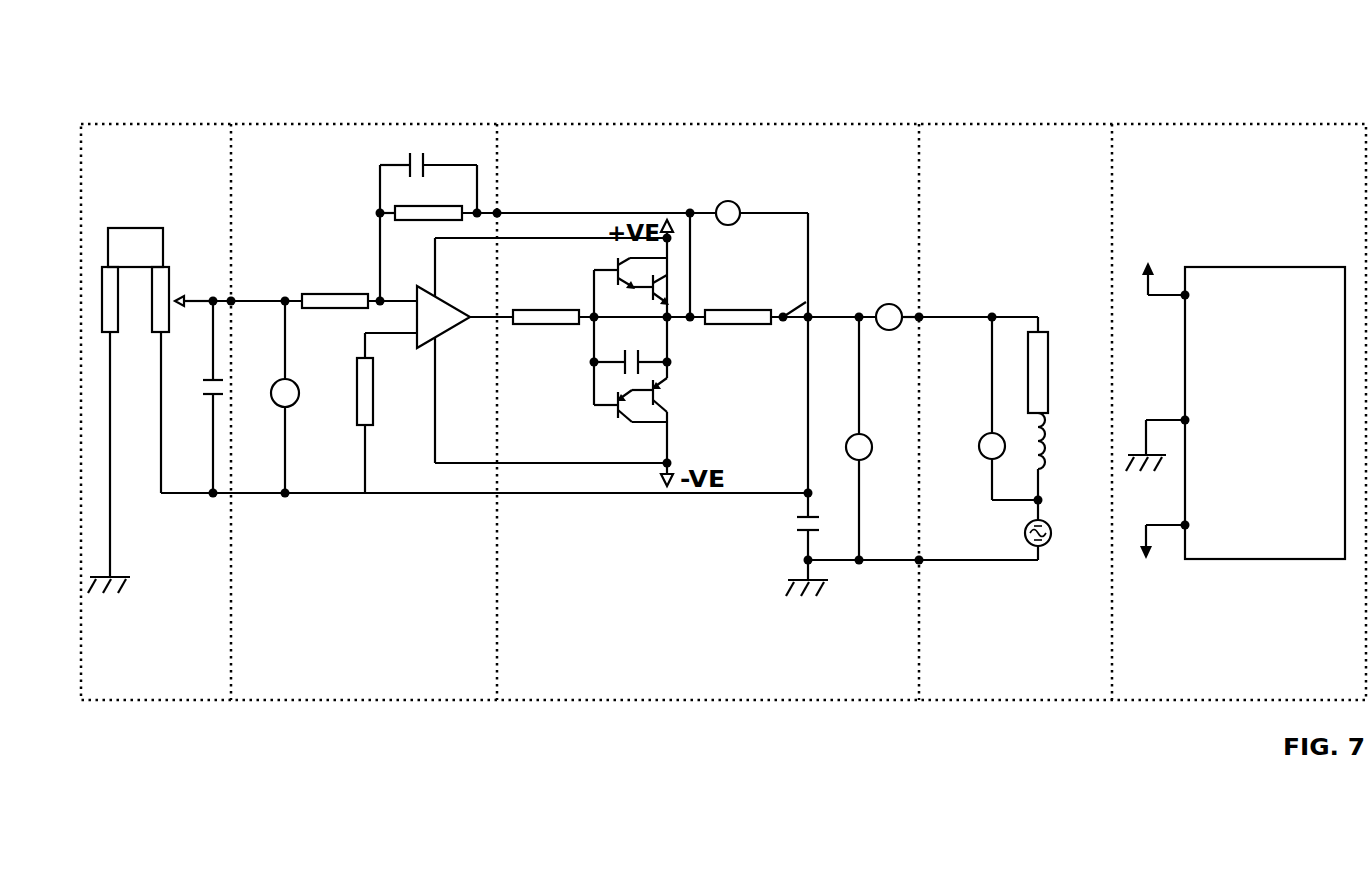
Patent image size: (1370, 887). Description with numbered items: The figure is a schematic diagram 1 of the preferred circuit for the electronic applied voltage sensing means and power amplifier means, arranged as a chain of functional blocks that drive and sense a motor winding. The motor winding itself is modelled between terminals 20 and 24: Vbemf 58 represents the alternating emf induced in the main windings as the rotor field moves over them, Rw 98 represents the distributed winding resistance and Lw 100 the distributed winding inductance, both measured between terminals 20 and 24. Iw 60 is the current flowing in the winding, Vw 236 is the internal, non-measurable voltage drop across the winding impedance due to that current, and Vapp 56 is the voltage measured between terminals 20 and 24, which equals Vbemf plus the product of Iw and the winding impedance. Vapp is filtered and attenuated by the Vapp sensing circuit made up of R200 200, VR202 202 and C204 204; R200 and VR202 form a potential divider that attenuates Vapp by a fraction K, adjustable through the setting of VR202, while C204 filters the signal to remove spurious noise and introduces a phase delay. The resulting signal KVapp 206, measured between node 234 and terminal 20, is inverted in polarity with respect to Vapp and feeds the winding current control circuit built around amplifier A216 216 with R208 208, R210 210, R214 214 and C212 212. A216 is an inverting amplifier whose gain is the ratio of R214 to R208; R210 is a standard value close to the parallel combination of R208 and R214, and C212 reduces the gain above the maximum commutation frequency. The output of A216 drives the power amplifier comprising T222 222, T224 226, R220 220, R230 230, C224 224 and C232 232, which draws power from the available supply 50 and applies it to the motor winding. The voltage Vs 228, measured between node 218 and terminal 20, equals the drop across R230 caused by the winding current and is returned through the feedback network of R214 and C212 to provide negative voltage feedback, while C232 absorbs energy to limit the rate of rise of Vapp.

The schematic diagram 1 is at (392, 112).
The resistor R200 200 is at (128, 410).
The variable resistor VR202 202 is at (196, 284).
The capacitor C204 204 is at (195, 399).
The KVapp voltage 206 is at (268, 399).
The resistor R208 208 is at (359, 288).
The resistor R210 210 is at (344, 413).
The capacitor C212 212 is at (420, 220).
The resistor R214 214 is at (437, 200).
The amplifier A216 216 is at (516, 350).
The node 218 is at (605, 250).
The resistor R220 220 is at (590, 304).
The transistor T222 222 is at (622, 280).
The capacitor C224 224 is at (631, 361).
The transistor T224 226 is at (625, 420).
The Vs voltage 228 is at (760, 336).
The resistor R230 230 is at (740, 304).
The capacitor C232 232 is at (788, 543).
The node 234 is at (257, 284).
The Vw voltage 236 is at (991, 411).
The terminal 20 is at (977, 304).
The terminal 24 is at (923, 574).
The available supply 50 is at (1235, 413).
The Vapp voltage 56 is at (845, 441).
The Vbemf 58 is at (1053, 540).
The Iw winding current 60 is at (863, 323).
The winding resistance Rw 98 is at (1055, 365).
The winding inductance Lw 100 is at (1062, 466).